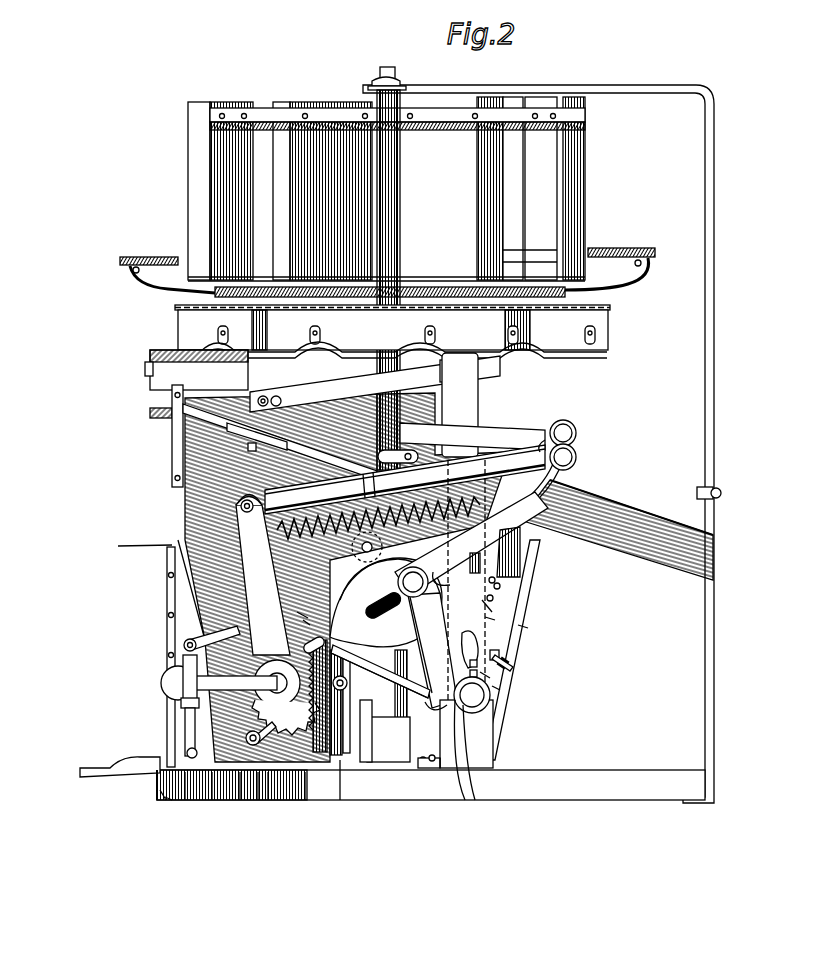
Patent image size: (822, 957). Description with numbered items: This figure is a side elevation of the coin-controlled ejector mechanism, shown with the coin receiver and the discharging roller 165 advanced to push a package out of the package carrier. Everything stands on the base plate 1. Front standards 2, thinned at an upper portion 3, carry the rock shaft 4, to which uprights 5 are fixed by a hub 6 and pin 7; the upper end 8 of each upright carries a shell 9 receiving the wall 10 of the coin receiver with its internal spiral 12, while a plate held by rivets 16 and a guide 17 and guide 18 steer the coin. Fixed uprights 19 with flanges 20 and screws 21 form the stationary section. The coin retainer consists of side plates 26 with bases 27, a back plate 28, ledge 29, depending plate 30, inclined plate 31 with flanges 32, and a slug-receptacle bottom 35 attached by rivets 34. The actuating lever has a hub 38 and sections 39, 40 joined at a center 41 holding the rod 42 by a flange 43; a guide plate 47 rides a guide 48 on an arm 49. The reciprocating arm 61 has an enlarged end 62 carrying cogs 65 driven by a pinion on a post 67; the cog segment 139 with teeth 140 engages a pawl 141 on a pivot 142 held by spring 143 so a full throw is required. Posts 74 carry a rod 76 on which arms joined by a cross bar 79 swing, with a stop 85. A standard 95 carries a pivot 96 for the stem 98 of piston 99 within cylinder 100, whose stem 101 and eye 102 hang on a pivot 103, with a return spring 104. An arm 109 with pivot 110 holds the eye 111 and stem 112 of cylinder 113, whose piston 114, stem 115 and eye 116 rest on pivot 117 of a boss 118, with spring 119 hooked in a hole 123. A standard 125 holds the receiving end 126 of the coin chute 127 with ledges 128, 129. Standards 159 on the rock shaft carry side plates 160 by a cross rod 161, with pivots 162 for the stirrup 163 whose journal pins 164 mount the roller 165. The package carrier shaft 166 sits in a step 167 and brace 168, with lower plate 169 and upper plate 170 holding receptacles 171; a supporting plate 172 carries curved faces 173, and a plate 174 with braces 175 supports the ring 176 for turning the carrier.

The base plate 1 is at (628, 790).
The standard 2 is at (484, 741).
The cut-away upper portion 3 is at (492, 700).
The rock shaft 4 is at (515, 662).
The upright 5 is at (464, 649).
The hub 6 is at (518, 650).
The pin 7 is at (497, 713).
The upper end 8 is at (517, 582).
The shell or casing 9 is at (530, 552).
The wall of coin receiver 10 is at (568, 493).
The spiral 12 is at (311, 613).
The rivet 16 is at (497, 598).
The guide 17 is at (547, 577).
The guide 18 is at (604, 497).
The upright 19 is at (493, 613).
The flange 20 is at (435, 768).
The screw 21 is at (432, 768).
The side plate 26 is at (515, 642).
The base of side plate 27 is at (488, 677).
The back plate 28 is at (520, 627).
The ledge 29 is at (485, 617).
The plate 30 is at (511, 655).
The inclined plate 31 is at (466, 770).
The flange 32 is at (475, 770).
The rivet 34 is at (462, 672).
The bottom of slug receptacle 35 is at (462, 660).
The hub 38 is at (495, 690).
The lever section 39 is at (425, 645).
The lever section 40 is at (446, 544).
The center 41 is at (426, 572).
The shaft or rod 42 is at (432, 650).
The upset or flange 43 is at (423, 579).
The guide plate 47 is at (406, 579).
The guide 48 is at (369, 579).
The arm 49 is at (379, 671).
The arm or bar 61 is at (352, 623).
The enlarged rear end 62 is at (338, 772).
The cogs 65 is at (157, 786).
The post 67 is at (286, 697).
The post 74 is at (344, 705).
The shaft or rod 76 is at (381, 762).
The cross plate or bar 79 is at (386, 602).
The stop 85 is at (380, 663).
The standard 95 is at (278, 616).
The pivot 96 is at (172, 535).
The stem 98 is at (118, 546).
The piston 99 is at (241, 518).
The cylinder 100 is at (405, 468).
The stem 101 is at (571, 439).
The eye 102 is at (599, 443).
The pivot 103 is at (574, 451).
The coil spring 104 is at (175, 550).
The arm 109 is at (216, 637).
The pivot 110 is at (161, 683).
The eye 111 is at (184, 649).
The stem 112 is at (183, 662).
The cylinder 113 is at (185, 734).
The piston or plunger 114 is at (181, 702).
The stem 115 is at (160, 774).
The eye 116 is at (185, 803).
The pivot 117 is at (162, 794).
The boss 118 is at (167, 798).
The coil spring 119 is at (295, 610).
The hole 123 is at (340, 812).
The standard 125 is at (172, 606).
The receiving end 126 is at (172, 441).
The coin chute 127 is at (195, 455).
The ledge 128 is at (700, 497).
The ledge 129 is at (616, 538).
The cog segment 139 is at (258, 801).
The teeth 140 is at (305, 801).
The pawl 141 is at (268, 803).
The pivot 142 is at (240, 803).
The coil spring 143 is at (212, 803).
The standard or support 159 is at (470, 430).
The side plate 160 is at (375, 384).
The pivot or cross rod 161 is at (459, 372).
The pivot 162 is at (286, 397).
The stirrup 163 is at (280, 435).
The journal pin 164 is at (150, 380).
The discharging roller 165 is at (199, 370).
The shaft 166 is at (402, 268).
The step 167 is at (385, 731).
The brace 168 is at (706, 350).
The lower plate 169 is at (417, 274).
The upper plate 170 is at (437, 128).
The receptacle or chamber 171 is at (215, 152).
The supporting plate 172 is at (393, 330).
The curved face 173 is at (392, 357).
The plate 174 is at (568, 293).
The brace 175 is at (610, 274).
The ring 176 is at (618, 248).